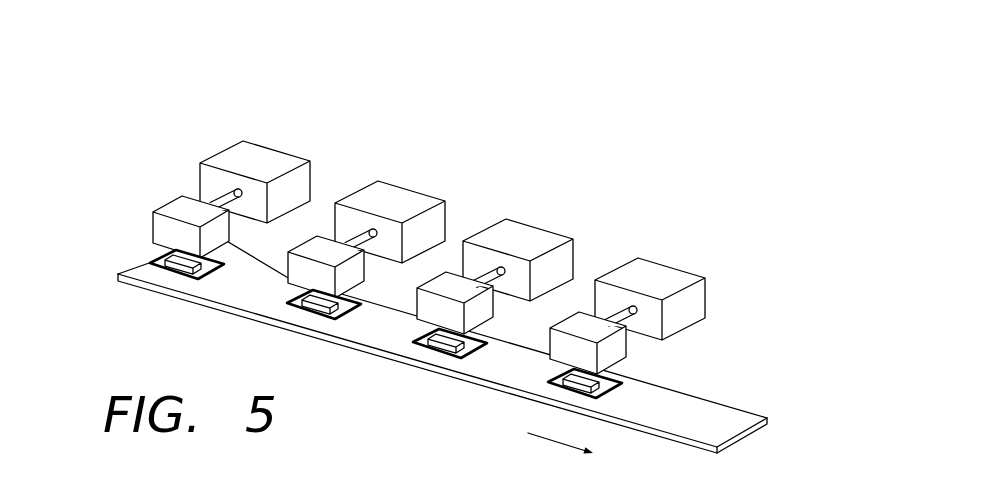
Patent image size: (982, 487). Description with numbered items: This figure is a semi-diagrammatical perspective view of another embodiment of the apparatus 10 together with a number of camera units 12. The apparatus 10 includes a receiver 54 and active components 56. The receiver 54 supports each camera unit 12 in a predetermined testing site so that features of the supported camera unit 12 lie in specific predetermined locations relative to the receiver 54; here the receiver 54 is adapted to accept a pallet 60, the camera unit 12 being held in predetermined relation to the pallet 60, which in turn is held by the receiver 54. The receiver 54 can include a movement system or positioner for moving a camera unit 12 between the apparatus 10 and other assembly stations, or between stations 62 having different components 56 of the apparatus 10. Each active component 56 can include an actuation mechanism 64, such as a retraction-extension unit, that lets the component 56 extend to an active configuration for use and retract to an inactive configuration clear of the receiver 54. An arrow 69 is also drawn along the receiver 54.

The apparatus 10 is at (762, 248).
The camera unit 12 is at (212, 279).
The receiver 54 is at (683, 397).
The active components 56 is at (160, 207).
The pallet 60 is at (178, 275).
The station 62 is at (248, 127).
The actuation mechanism 64 is at (237, 190).
The arrow 69 is at (548, 440).